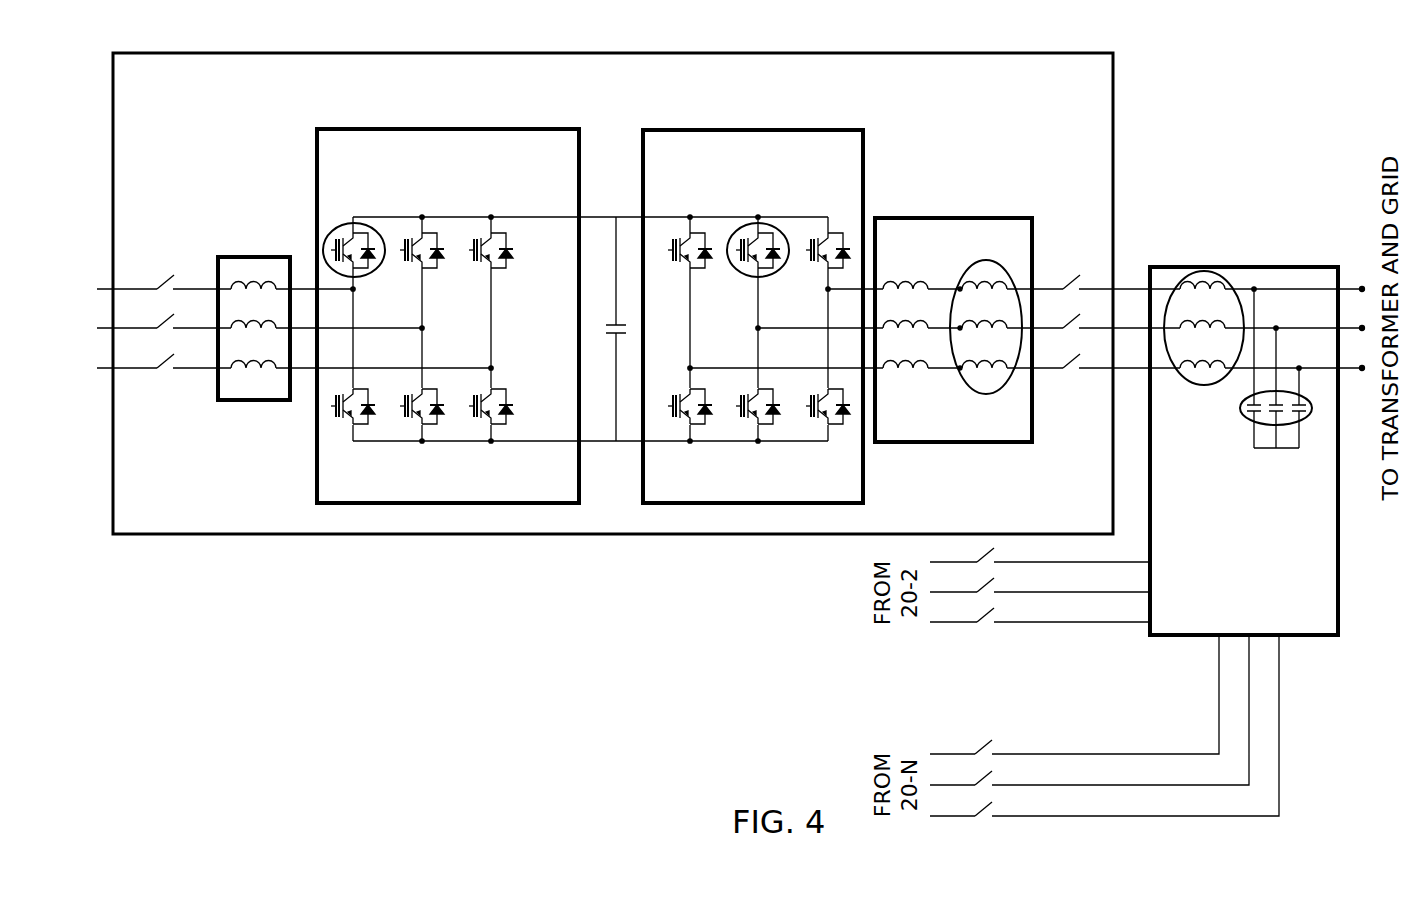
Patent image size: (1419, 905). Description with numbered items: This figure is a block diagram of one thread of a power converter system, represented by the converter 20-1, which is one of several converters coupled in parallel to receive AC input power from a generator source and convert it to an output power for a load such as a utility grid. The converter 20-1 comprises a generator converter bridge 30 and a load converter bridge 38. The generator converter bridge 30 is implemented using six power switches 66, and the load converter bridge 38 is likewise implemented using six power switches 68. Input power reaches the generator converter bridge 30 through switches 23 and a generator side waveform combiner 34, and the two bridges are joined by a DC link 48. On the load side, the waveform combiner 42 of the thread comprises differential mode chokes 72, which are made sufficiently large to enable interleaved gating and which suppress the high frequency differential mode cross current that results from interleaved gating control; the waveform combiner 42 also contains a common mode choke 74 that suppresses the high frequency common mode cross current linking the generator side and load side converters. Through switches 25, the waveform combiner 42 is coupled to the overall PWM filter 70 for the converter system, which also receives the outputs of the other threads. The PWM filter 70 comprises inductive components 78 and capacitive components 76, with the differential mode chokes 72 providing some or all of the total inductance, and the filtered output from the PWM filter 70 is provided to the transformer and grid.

The converter 20-1 is at (1113, 90).
The input switches 23 is at (164, 362).
The generator side waveform combiner 34 is at (246, 257).
The generator converter bridge 30 is at (466, 287).
The power switches 66 is at (353, 224).
The DC link 48 is at (606, 326).
The load converter bridge 38 is at (746, 287).
The power switches 68 is at (770, 230).
The differential mode chokes 72 is at (903, 282).
The waveform combiner 42 is at (969, 302).
The common mode choke 74 is at (995, 392).
The output switches 25 is at (1070, 362).
The PWM filter 70 is at (1257, 422).
The inductive components 78 is at (1204, 386).
The capacitive components 76 is at (1302, 425).